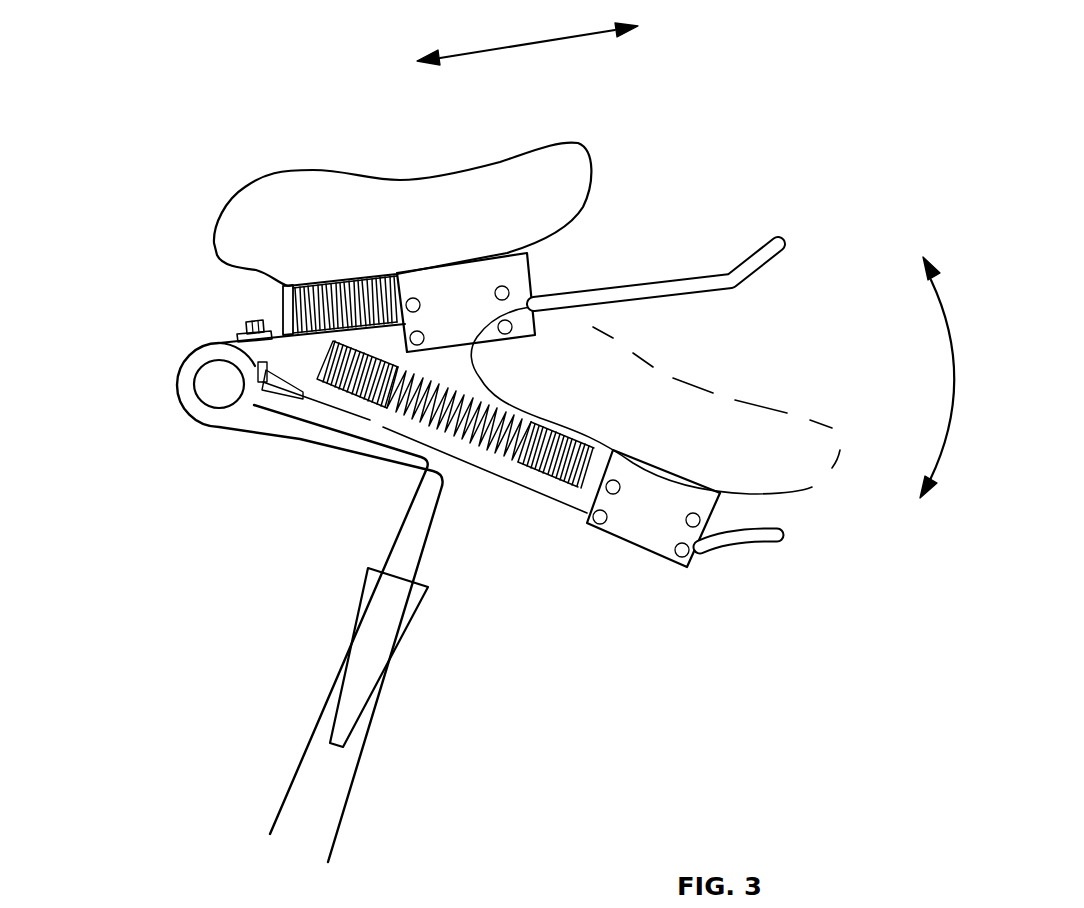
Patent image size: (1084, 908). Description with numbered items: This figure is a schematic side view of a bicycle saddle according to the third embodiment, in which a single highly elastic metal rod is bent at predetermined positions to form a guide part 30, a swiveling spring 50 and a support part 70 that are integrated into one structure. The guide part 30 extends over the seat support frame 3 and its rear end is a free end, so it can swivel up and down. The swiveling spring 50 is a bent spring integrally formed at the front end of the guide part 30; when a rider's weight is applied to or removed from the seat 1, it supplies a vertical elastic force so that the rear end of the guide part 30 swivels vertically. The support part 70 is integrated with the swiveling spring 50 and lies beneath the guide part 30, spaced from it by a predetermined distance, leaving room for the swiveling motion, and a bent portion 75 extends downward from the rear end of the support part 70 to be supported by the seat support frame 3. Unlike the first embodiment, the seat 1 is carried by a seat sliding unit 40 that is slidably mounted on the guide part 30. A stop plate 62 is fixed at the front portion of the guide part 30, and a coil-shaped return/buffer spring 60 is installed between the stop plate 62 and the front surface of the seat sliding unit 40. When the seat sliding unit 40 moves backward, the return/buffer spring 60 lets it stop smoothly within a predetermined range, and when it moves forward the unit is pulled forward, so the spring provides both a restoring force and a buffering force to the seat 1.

The seat 1 is at (287, 217).
The seat support frame 3 is at (327, 790).
The guide part 30 is at (678, 276).
The seat sliding unit 40 is at (502, 283).
The swiveling spring 50 is at (170, 415).
The return/buffer spring 60 is at (465, 432).
The stop plate 62 is at (286, 300).
The support part 70 is at (408, 466).
The bent portion 75 is at (360, 682).